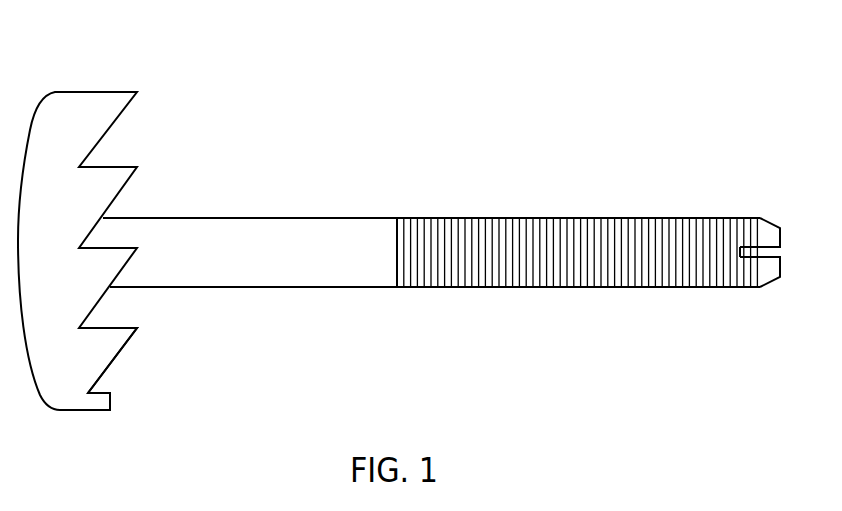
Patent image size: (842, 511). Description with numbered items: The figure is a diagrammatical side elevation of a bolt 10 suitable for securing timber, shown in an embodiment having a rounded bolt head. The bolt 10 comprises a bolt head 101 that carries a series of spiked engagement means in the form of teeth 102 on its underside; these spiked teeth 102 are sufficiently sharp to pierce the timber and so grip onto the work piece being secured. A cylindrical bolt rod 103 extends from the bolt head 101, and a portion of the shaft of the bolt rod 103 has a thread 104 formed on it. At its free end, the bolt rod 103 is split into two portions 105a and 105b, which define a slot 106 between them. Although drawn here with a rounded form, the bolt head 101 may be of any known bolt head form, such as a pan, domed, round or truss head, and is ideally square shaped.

The bolt 10 is at (543, 364).
The bolt head 101 is at (63, 105).
The teeth 102 is at (107, 331).
The bolt rod 103 is at (272, 233).
The thread 104 is at (530, 220).
The first portion 105a is at (737, 215).
The second portion 105b is at (733, 289).
The slot 106 is at (782, 252).